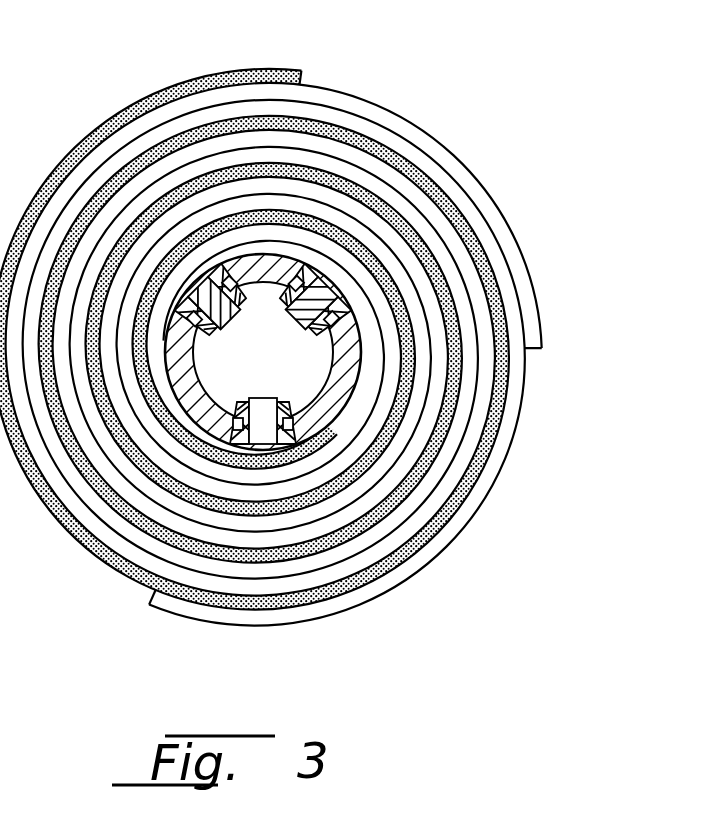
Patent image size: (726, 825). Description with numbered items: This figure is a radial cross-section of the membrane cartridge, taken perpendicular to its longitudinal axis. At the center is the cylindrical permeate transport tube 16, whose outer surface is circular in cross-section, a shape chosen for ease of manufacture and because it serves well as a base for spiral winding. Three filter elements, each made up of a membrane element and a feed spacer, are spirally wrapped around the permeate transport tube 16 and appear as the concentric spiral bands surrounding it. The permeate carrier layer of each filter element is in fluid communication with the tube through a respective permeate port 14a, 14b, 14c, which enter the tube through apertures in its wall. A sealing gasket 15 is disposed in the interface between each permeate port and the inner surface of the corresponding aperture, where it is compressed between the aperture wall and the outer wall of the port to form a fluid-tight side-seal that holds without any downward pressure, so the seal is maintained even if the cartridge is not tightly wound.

The permeate port 14a is at (300, 326).
The permeate port 14b is at (266, 398).
The permeate port 14c is at (230, 312).
The sealing gasket 15 is at (263, 398).
The permeate transport tube 16 is at (190, 371).